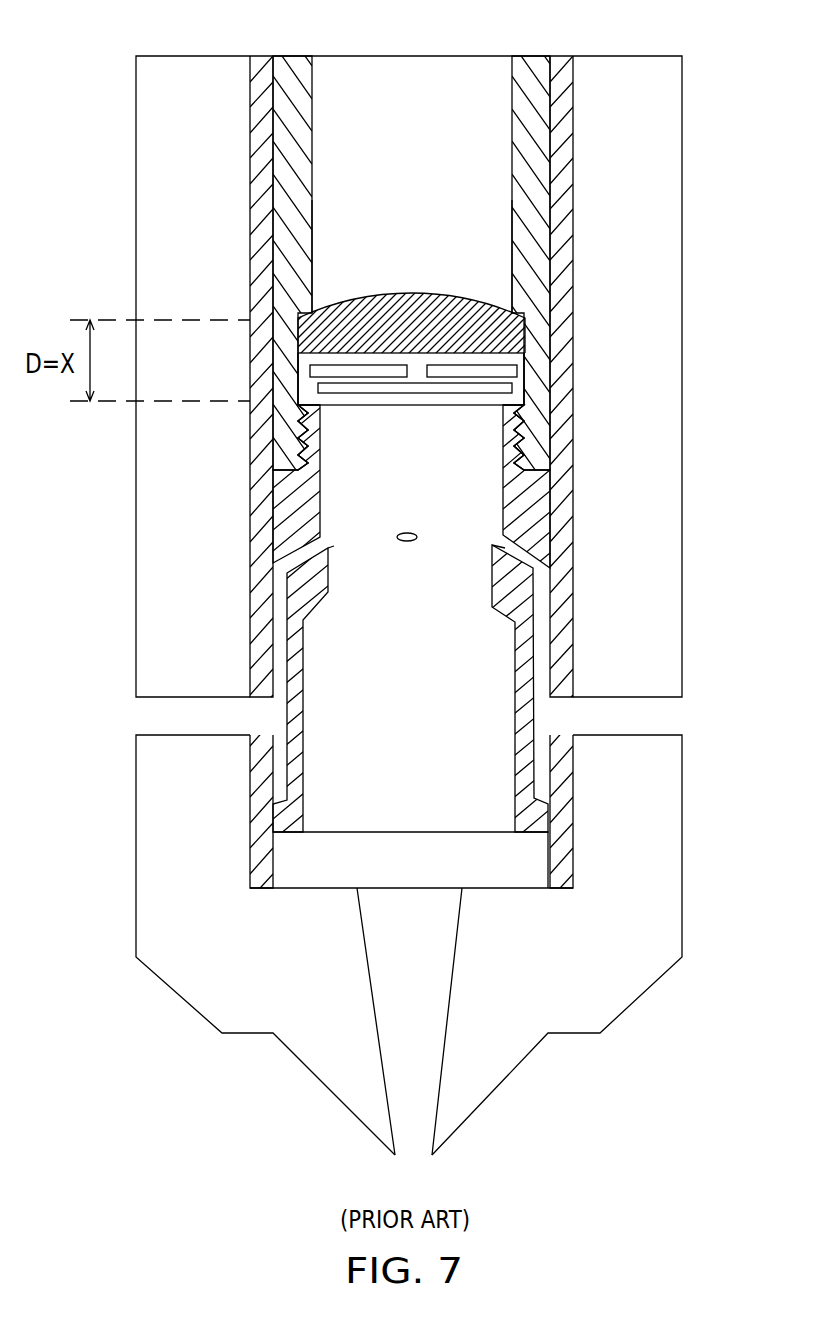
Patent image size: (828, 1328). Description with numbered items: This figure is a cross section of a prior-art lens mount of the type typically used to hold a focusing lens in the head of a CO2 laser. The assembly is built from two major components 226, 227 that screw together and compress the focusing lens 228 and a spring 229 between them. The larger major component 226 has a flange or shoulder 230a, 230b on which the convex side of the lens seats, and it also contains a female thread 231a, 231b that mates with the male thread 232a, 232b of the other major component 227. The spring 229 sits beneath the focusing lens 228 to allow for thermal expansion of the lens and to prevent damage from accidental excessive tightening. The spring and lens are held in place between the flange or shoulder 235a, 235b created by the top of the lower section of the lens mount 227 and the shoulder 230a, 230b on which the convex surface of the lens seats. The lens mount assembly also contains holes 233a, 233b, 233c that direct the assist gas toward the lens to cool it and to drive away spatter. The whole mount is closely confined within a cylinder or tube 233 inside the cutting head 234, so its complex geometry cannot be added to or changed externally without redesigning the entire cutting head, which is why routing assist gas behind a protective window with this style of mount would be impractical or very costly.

The major component 226 is at (293, 57).
The major component 227 is at (305, 513).
The focusing lens 228 is at (445, 291).
The spring 229 is at (437, 401).
The flange or shoulder 230a is at (300, 278).
The flange or shoulder 230b is at (548, 303).
The female thread 231a is at (302, 442).
The female thread 231b is at (530, 432).
The male thread 232a is at (302, 444).
The male thread 232b is at (517, 447).
The cylinder or tube 233 is at (263, 62).
The hole 233a is at (334, 546).
The hole 233b is at (407, 542).
The hole 233c is at (505, 548).
The cutting head 234 is at (683, 645).
The flange or shoulder 235a is at (300, 369).
The flange or shoulder 235b is at (527, 407).